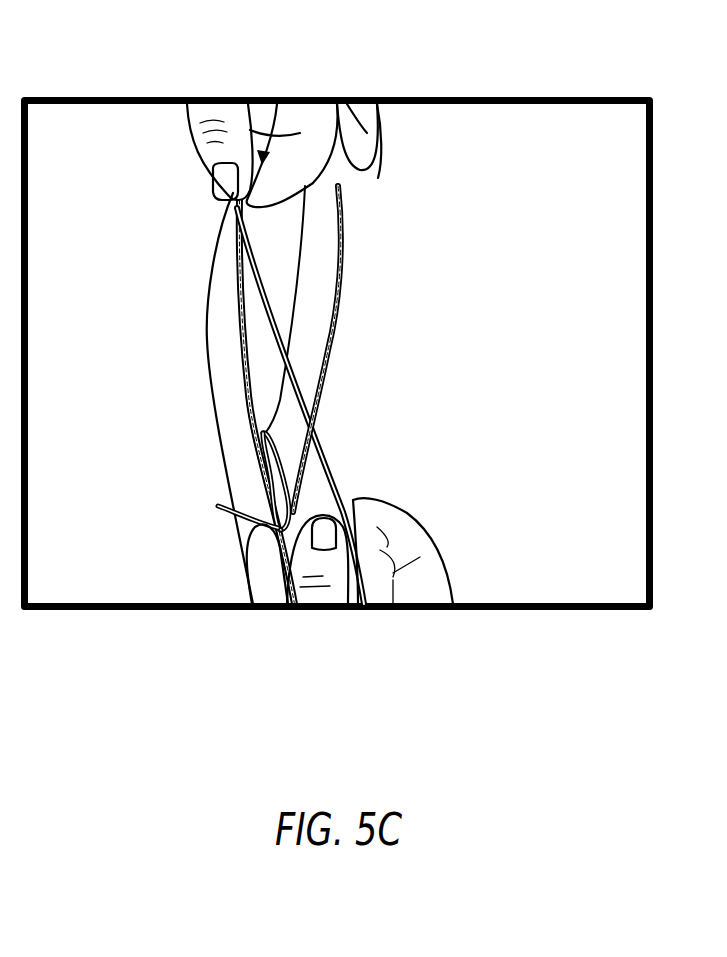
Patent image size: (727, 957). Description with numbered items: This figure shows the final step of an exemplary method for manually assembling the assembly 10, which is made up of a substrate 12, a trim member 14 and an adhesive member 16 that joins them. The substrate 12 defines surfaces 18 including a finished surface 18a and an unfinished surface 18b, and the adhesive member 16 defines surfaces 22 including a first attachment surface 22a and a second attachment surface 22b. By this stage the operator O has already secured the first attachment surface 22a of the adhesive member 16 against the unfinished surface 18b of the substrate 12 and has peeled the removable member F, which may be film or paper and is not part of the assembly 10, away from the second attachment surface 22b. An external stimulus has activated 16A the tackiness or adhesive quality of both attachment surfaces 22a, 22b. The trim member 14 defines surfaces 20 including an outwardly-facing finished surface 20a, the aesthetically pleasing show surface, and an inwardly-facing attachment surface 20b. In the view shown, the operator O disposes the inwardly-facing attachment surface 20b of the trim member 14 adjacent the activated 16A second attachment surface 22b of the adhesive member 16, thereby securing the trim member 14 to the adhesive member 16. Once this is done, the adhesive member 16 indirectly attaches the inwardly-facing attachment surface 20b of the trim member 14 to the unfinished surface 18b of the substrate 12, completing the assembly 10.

The operator O is at (392, 127).
The assembly 10 is at (187, 395).
The substrate 12 is at (222, 270).
The trim member 14 is at (237, 210).
The adhesive member 16 is at (230, 240).
The activated tackiness or adhesive quality 16A is at (200, 464).
The surfaces of the trim member 20 is at (360, 405).
The outwardly-facing finished surface 20a is at (262, 287).
The inwardly-facing attachment surface 20b is at (248, 301).
The surfaces of the adhesive member 22 is at (348, 395).
The first attachment surface 22a is at (245, 388).
The second attachment surface 22b is at (247, 373).
The surfaces of the substrate 18 is at (190, 467).
The finished surface 18a is at (248, 448).
The unfinished surface 18b is at (252, 404).
The removable member F is at (220, 527).